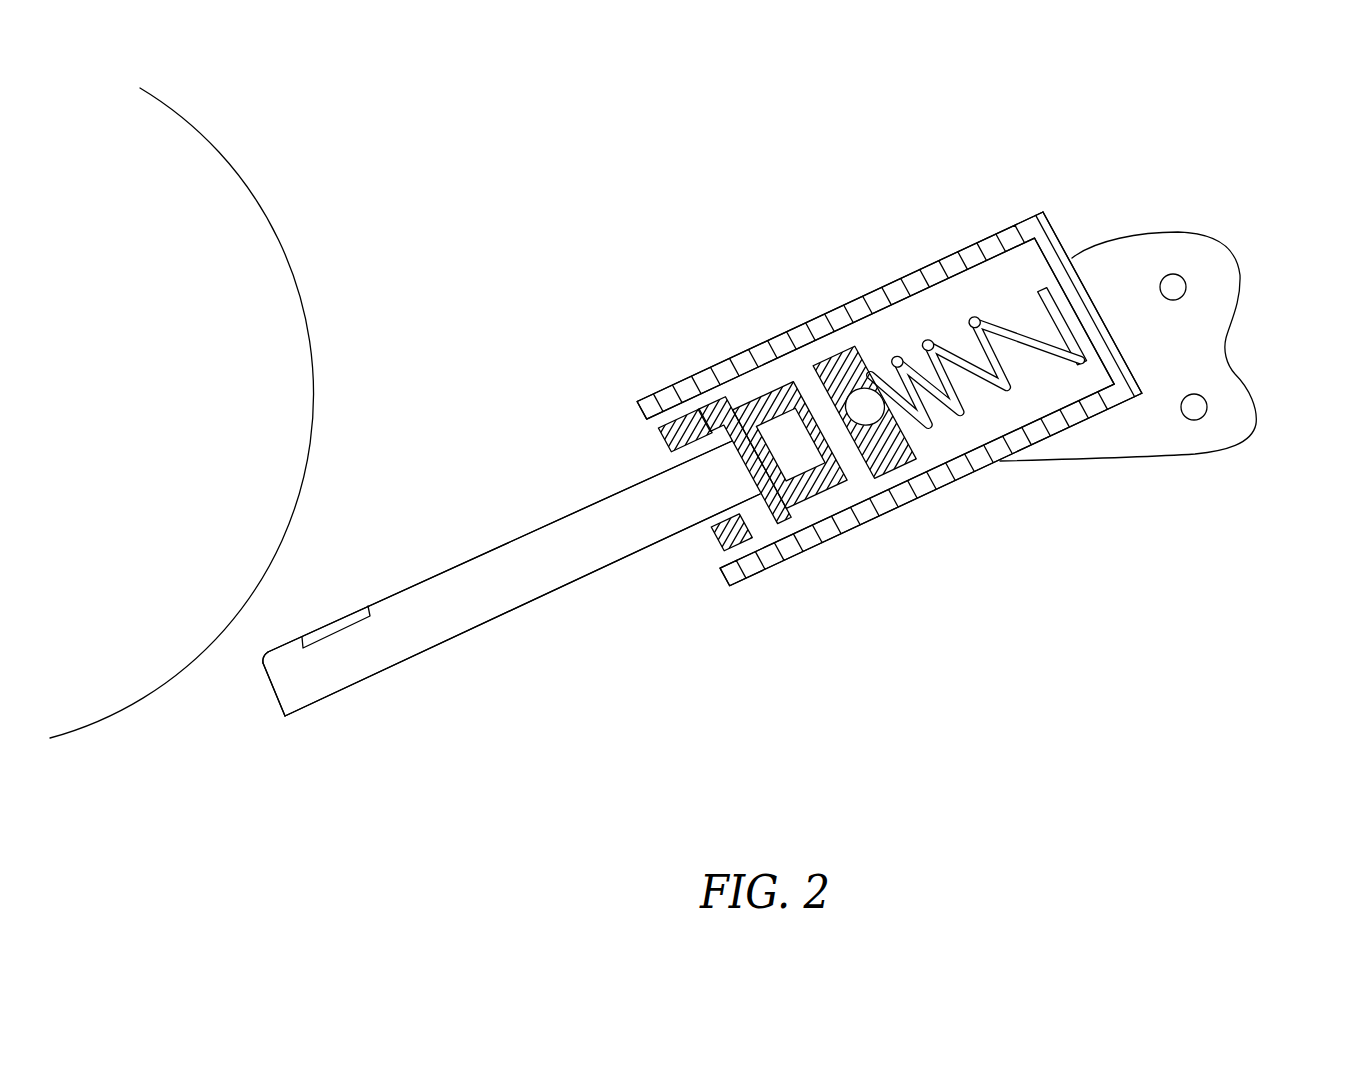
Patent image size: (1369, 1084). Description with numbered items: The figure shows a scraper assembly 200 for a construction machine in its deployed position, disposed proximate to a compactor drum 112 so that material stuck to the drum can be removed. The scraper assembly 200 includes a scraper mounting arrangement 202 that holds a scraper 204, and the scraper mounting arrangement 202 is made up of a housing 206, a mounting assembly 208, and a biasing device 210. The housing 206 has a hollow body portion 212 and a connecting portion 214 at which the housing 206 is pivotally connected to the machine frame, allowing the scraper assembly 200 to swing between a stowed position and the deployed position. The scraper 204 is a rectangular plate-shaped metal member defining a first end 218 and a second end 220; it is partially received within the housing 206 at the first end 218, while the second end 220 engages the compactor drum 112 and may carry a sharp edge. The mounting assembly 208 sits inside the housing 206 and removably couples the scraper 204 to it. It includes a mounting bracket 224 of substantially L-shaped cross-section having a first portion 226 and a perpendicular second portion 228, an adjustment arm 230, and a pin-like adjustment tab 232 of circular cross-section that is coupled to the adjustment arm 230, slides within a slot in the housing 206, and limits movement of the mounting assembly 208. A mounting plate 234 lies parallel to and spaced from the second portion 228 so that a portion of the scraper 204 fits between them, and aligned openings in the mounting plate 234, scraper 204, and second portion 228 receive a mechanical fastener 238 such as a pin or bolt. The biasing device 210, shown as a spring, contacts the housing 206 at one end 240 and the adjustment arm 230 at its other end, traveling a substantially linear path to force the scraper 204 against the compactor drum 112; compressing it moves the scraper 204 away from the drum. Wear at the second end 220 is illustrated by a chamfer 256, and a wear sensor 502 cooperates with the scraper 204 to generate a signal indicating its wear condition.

The compactor drum 112 is at (222, 205).
The scraper assembly 200 is at (1278, 140).
The scraper mounting arrangement 202 is at (881, 407).
The scraper 204 is at (487, 625).
The housing 206 is at (1083, 307).
The mounting assembly 208 is at (650, 458).
The biasing device 210 is at (973, 364).
The hollow body portion 212 is at (844, 315).
The connecting portion 214 is at (1205, 332).
The first end 218 is at (632, 565).
The second end 220 is at (250, 665).
The mounting bracket 224 is at (630, 387).
The first portion 226 is at (778, 449).
The second portion 228 is at (931, 481).
The adjustment arm 230 is at (778, 449).
The adjustment tab 232 is at (865, 407).
The mounting plate 234 is at (778, 449).
The mechanical fastener 238 is at (778, 449).
The one end 240 is at (1062, 326).
The chamfer 256 is at (263, 666).
The wear sensor 502 is at (342, 620).